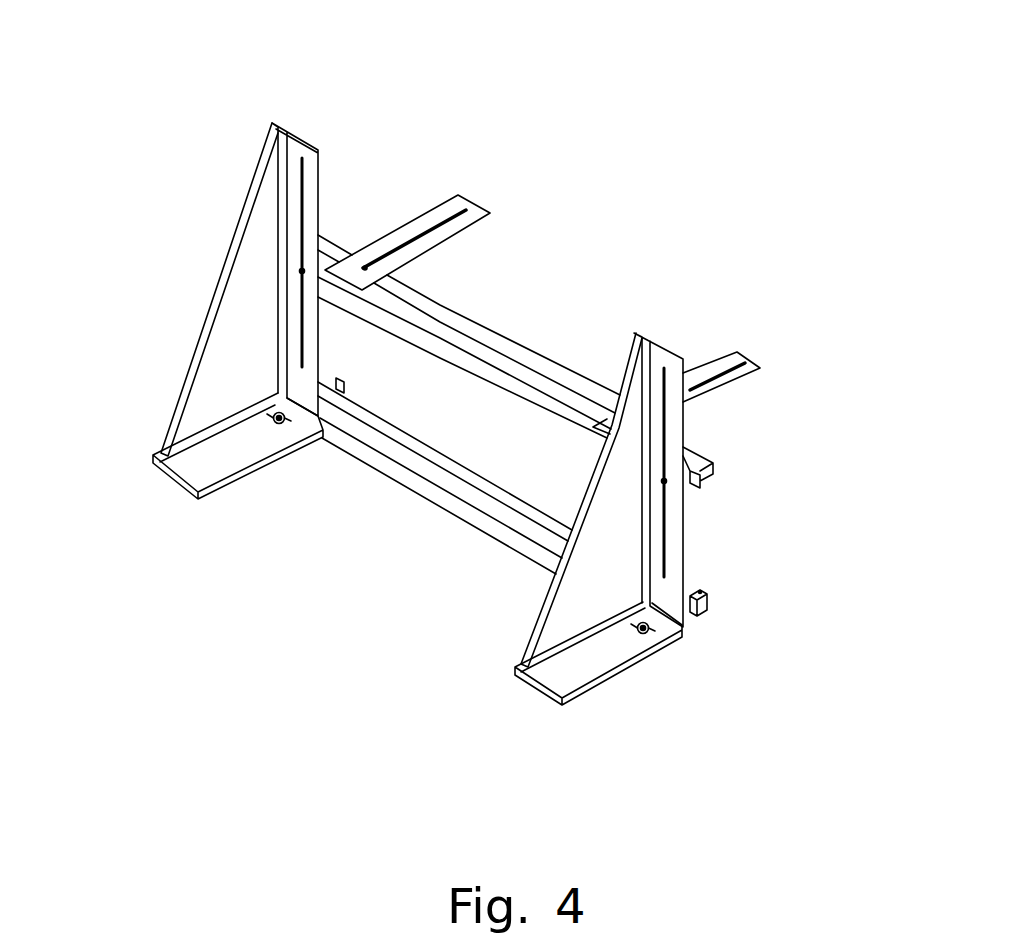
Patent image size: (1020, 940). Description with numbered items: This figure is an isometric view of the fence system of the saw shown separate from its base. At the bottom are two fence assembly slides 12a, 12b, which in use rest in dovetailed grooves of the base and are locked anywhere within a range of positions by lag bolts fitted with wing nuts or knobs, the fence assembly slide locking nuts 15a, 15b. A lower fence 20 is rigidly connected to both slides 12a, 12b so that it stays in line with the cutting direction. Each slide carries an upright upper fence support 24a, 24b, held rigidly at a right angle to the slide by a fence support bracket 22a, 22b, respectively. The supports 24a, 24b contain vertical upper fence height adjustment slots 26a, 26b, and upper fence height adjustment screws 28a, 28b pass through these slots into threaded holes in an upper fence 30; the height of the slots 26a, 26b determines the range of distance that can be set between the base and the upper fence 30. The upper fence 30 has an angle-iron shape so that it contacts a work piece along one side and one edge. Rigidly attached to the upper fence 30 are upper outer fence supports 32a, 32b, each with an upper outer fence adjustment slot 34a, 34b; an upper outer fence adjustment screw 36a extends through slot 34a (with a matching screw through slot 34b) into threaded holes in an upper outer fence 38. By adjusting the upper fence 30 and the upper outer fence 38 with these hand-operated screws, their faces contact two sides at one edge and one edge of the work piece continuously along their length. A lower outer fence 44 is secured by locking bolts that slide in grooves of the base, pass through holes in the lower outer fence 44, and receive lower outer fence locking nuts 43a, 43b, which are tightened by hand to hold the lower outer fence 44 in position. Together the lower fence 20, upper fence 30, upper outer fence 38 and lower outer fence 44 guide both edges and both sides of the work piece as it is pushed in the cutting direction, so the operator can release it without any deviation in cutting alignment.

The fence assembly slide 12a is at (183, 482).
The fence assembly slide 12b is at (557, 693).
The fence assembly slide locking nut 15a is at (278, 424).
The fence assembly slide locking nut 15b is at (642, 634).
The lower fence 20 is at (390, 478).
The fence support bracket 22a is at (202, 350).
The fence support bracket 22b is at (538, 614).
The upper fence support 24a is at (320, 152).
The upper fence support 24b is at (663, 345).
The upper fence height adjustment slot 26a is at (300, 202).
The upper fence height adjustment slot 26b is at (668, 533).
The upper fence height adjustment screw 28a is at (301, 271).
The upper fence height adjustment screw 28b is at (663, 481).
The upper fence 30 is at (533, 412).
The upper outer fence support 32a is at (458, 196).
The upper outer fence support 32b is at (737, 352).
The upper outer fence adjustment slot 34a is at (463, 221).
The upper outer fence adjustment slot 34b is at (747, 363).
The upper outer fence adjustment screw 36a is at (363, 267).
The upper outer fence 38 is at (702, 458).
The lower outer fence locking nut 43a is at (348, 366).
The lower outer fence locking nut 43b is at (706, 595).
The lower outer fence 44 is at (700, 592).